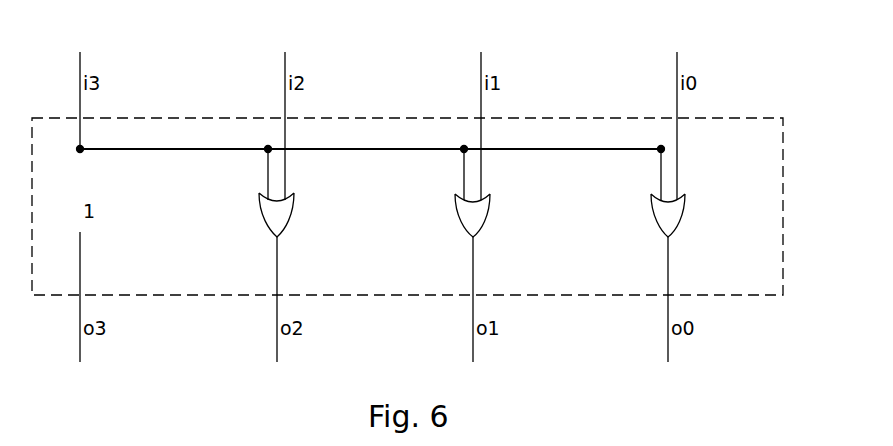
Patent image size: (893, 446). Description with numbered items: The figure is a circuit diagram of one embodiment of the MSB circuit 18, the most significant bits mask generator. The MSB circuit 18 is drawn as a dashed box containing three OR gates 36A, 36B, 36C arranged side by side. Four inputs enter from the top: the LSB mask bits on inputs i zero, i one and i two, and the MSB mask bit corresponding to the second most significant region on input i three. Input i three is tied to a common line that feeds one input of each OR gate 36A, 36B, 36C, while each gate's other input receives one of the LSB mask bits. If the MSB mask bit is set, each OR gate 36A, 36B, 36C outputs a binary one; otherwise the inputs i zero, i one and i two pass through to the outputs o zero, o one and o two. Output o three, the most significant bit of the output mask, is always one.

The MSB circuit 18 is at (730, 194).
The OR gate 36A is at (652, 215).
The OR gate 36B is at (457, 215).
The OR gate 36C is at (262, 214).